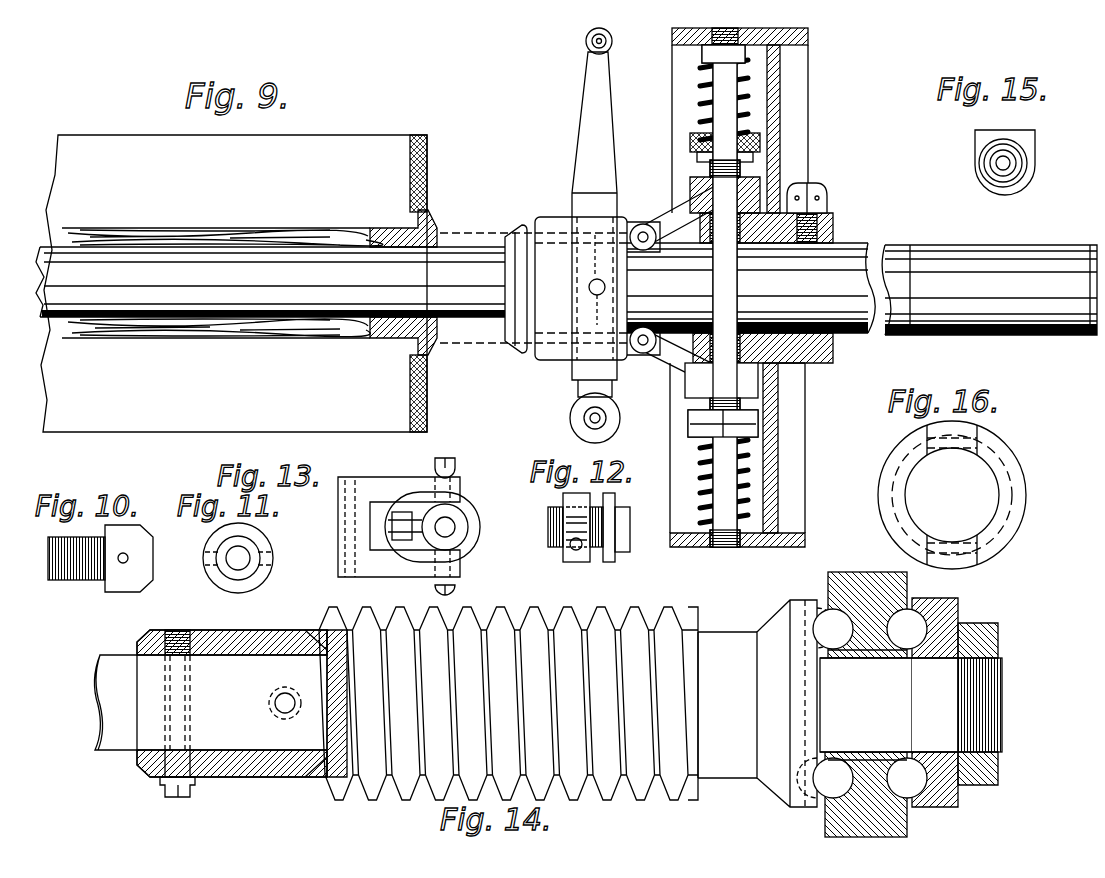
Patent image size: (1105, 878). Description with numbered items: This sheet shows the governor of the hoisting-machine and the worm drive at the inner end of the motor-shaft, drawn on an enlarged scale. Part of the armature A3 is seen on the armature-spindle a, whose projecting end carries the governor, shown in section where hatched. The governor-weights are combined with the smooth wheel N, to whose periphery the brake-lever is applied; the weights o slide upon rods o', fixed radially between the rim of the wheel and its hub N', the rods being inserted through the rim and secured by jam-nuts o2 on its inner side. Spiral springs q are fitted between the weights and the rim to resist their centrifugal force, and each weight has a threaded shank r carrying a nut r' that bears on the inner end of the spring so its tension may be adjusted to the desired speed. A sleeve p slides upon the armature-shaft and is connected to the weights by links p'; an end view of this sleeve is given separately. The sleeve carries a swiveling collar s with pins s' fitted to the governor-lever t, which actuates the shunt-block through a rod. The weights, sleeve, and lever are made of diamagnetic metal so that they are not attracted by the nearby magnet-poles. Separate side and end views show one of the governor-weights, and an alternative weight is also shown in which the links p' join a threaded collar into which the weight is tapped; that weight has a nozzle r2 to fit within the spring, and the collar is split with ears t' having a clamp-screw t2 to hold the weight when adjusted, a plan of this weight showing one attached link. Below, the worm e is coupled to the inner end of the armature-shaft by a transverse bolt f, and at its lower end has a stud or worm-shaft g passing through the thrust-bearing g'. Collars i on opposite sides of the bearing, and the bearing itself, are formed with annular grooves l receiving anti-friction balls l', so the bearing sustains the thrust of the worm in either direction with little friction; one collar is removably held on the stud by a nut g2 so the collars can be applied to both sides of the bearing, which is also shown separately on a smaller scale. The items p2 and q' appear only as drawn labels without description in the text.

In FIG. 9, the armature A3 is at (386, 143).
In FIG. 9, the armature-spindle a is at (482, 246).
In FIG. 14, the armature-spindle a is at (103, 702).
In FIG. 9, the sleeve p is at (541, 277).
In FIG. 16, the sleeve p is at (942, 495).
In FIG. 9, the links p' is at (677, 286).
In FIG. 13, the links p' is at (399, 513).
In FIG. 13, the pivot boss p2 is at (462, 510).
In FIG. 12, the pivot boss p2 is at (581, 556).
In FIG. 9, the governor-lever t is at (586, 235).
In FIG. 13, the ears t' is at (397, 511).
In FIG. 12, the ears t' is at (558, 502).
In FIG. 12, the clamp-screw t2 is at (570, 545).
In FIG. 9, the swiveling collar s is at (593, 255).
In FIG. 9, the pins s' is at (598, 302).
In FIG. 9, the smooth wheel N is at (756, 135).
In FIG. 9, the hub N' is at (758, 440).
In FIG. 9, the weights o is at (693, 287).
In FIG. 10, the weights o is at (129, 571).
In FIG. 11, the weights o is at (246, 560).
In FIG. 9, the rods o' is at (680, 82).
In FIG. 9, the jam-nuts o2 is at (702, 55).
In FIG. 9, the spiral springs q is at (698, 100).
In FIG. 9, the lower spring q' is at (710, 481).
In FIG. 9, the threaded shanks r is at (700, 160).
In FIG. 10, the threaded shanks r is at (76, 574).
In FIG. 11, the threaded shanks r is at (222, 568).
In FIG. 13, the threaded shanks r is at (461, 527).
In FIG. 12, the threaded shanks r is at (558, 524).
In FIG. 9, the nuts r' is at (703, 142).
In FIG. 12, the nozzle r2 is at (628, 547).
In FIG. 14, the worm e is at (477, 699).
In FIG. 14, the transverse bolt f is at (190, 710).
In FIG. 15, the stud or worm-shaft g is at (986, 162).
In FIG. 14, the stud or worm-shaft g is at (889, 705).
In FIG. 14, the thrust-bearing g' is at (866, 689).
In FIG. 14, the nut g2 is at (980, 624).
In FIG. 14, the collars i is at (935, 612).
In FIG. 15, the annular grooves l is at (988, 163).
In FIG. 14, the annular grooves l is at (875, 722).
In FIG. 14, the anti-friction balls l' is at (862, 703).